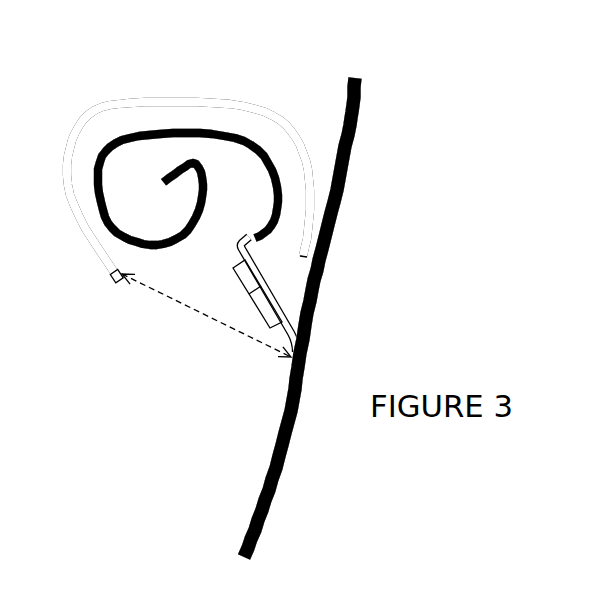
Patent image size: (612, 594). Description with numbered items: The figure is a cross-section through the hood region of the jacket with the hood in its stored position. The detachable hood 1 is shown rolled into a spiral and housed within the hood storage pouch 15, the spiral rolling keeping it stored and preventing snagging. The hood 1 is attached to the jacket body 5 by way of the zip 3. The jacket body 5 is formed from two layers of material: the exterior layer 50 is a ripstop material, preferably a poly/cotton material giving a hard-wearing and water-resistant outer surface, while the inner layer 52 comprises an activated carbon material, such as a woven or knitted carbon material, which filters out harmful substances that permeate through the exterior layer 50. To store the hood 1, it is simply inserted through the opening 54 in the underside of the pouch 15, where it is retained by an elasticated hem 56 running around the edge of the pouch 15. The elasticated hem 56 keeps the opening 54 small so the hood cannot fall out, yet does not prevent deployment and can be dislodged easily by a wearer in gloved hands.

The detachable hood 1 is at (150, 130).
The zip 3 is at (245, 287).
The jacket body 5 is at (370, 303).
The hood storage pouch 15 is at (182, 100).
The exterior layer 50 is at (352, 312).
The inner layer 52 is at (363, 93).
The opening 54 is at (167, 297).
The elasticated hem 56 is at (114, 280).